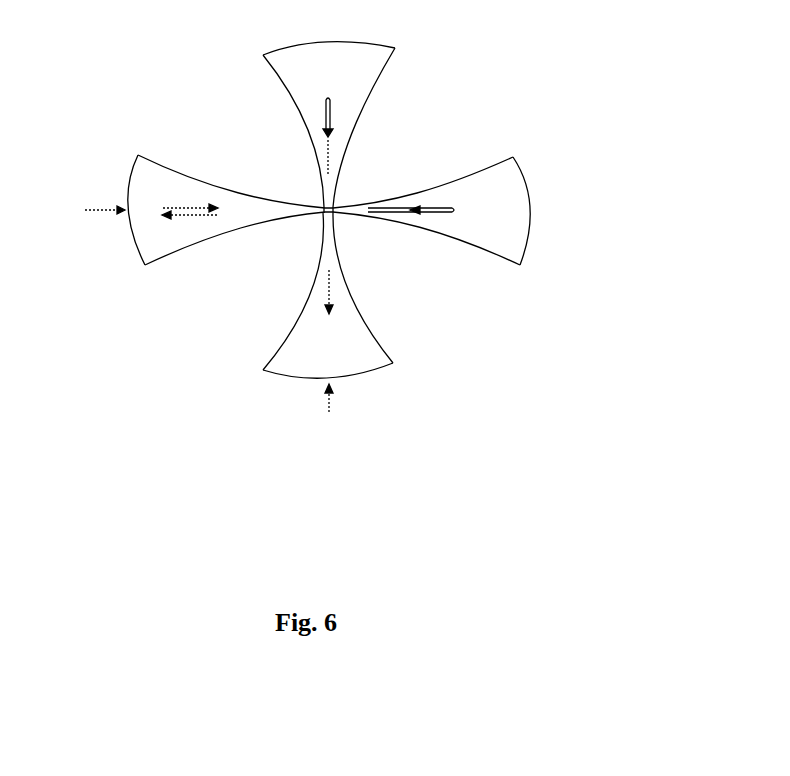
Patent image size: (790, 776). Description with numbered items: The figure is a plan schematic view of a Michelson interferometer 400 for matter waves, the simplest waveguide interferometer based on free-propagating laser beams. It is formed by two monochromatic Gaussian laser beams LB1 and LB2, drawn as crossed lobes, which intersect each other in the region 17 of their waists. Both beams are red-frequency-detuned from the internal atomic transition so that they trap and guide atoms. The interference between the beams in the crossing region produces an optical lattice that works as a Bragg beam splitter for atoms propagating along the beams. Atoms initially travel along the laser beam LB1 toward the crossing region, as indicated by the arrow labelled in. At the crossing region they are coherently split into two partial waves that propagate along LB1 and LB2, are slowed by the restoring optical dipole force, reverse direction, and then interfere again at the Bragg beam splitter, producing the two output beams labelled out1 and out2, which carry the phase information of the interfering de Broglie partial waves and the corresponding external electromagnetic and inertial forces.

The crossing region of the beam waists 17 is at (327, 209).
The Michelson interferometer 400 is at (428, 107).
The first laser beam LB1 is at (103, 201).
The second laser beam LB2 is at (346, 398).
The input direction arrow in is at (190, 202).
The first output beam out1 is at (189, 223).
The second output beam out2 is at (353, 292).